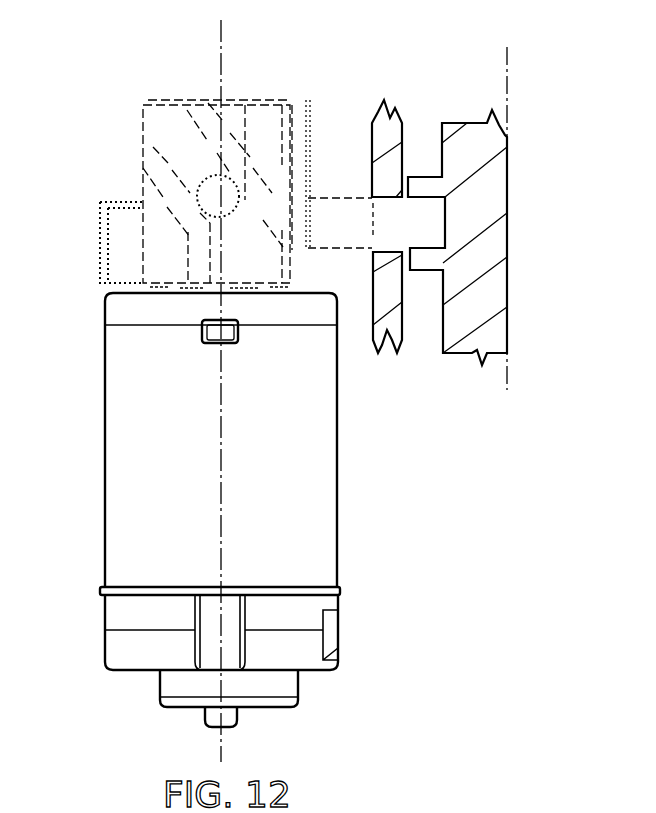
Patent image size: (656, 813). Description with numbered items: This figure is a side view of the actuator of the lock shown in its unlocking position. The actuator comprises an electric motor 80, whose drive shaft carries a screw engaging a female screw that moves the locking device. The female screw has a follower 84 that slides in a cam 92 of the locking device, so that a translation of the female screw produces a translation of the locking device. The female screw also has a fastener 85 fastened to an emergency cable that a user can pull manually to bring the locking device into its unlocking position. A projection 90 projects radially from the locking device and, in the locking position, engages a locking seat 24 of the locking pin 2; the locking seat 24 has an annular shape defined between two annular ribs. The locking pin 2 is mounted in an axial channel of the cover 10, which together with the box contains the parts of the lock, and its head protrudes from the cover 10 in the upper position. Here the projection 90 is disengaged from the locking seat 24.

The locking pin 2 is at (475, 163).
The cover 10 is at (390, 323).
The locking seat 24 is at (422, 230).
The electric motor 80 is at (297, 537).
The follower 84 is at (205, 192).
The fastener 85 is at (120, 258).
The projection 90 is at (350, 220).
The cam 92 is at (197, 162).